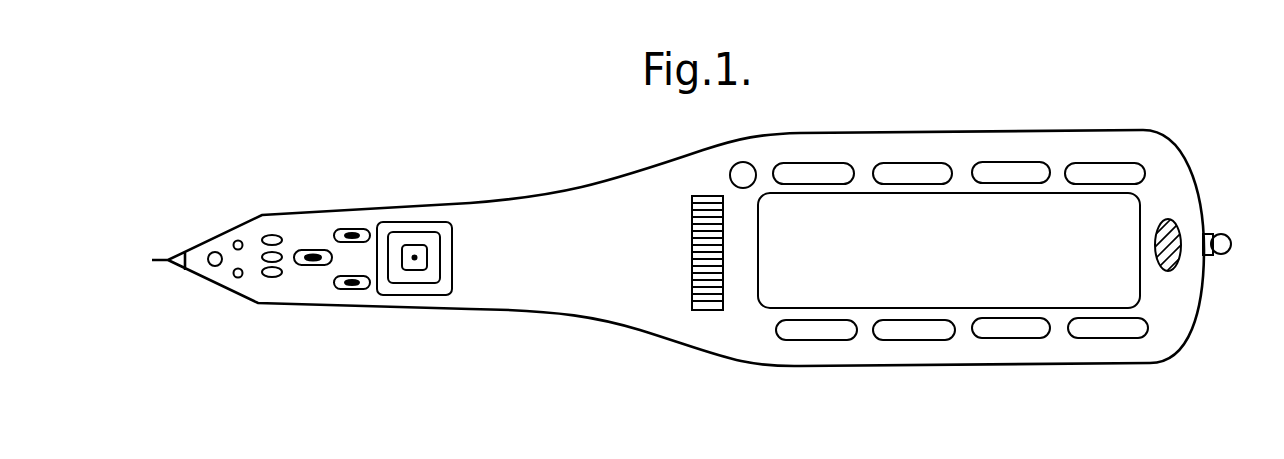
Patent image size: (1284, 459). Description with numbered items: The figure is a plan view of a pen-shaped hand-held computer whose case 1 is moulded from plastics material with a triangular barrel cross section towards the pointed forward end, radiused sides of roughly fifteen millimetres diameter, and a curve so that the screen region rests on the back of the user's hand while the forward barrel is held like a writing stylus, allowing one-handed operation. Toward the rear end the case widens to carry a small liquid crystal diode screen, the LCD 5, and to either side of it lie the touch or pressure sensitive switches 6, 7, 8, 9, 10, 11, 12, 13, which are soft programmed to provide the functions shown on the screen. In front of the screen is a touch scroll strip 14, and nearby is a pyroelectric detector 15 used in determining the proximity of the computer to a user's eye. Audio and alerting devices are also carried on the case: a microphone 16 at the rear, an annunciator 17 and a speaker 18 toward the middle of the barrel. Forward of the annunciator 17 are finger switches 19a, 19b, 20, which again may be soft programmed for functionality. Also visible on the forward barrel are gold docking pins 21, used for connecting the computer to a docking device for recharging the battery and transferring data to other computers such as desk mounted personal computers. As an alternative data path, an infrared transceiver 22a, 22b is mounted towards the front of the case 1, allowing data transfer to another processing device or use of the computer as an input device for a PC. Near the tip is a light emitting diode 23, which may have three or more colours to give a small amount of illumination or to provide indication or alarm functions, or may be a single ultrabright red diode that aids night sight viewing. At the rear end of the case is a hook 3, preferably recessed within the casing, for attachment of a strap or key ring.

The case 1 is at (585, 320).
The hook 3 is at (1226, 233).
The LCD 5 is at (1141, 213).
The touch or pressure sensitive switch 6 is at (830, 162).
The touch or pressure sensitive switch 7 is at (915, 162).
The touch or pressure sensitive switch 8 is at (1010, 161).
The touch or pressure sensitive switch 9 is at (1105, 162).
The touch or pressure sensitive switch 10 is at (828, 341).
The touch or pressure sensitive switch 11 is at (918, 341).
The touch or pressure sensitive switch 12 is at (1018, 339).
The touch or pressure sensitive switch 13 is at (1103, 339).
The touch scroll strip 14 is at (708, 311).
The pyroelectric detector 15 is at (737, 162).
The microphone 16 is at (1178, 262).
The annunciator 17 is at (425, 284).
The speaker 18 is at (413, 243).
The finger switch 19a is at (356, 228).
The finger switch 19b is at (352, 290).
The finger switch 20 is at (310, 249).
The gold docking pins 21 is at (264, 235).
The infrared transceiver 22a is at (234, 241).
The infrared transceiver 22b is at (238, 280).
The light emitting diode 23 is at (209, 265).